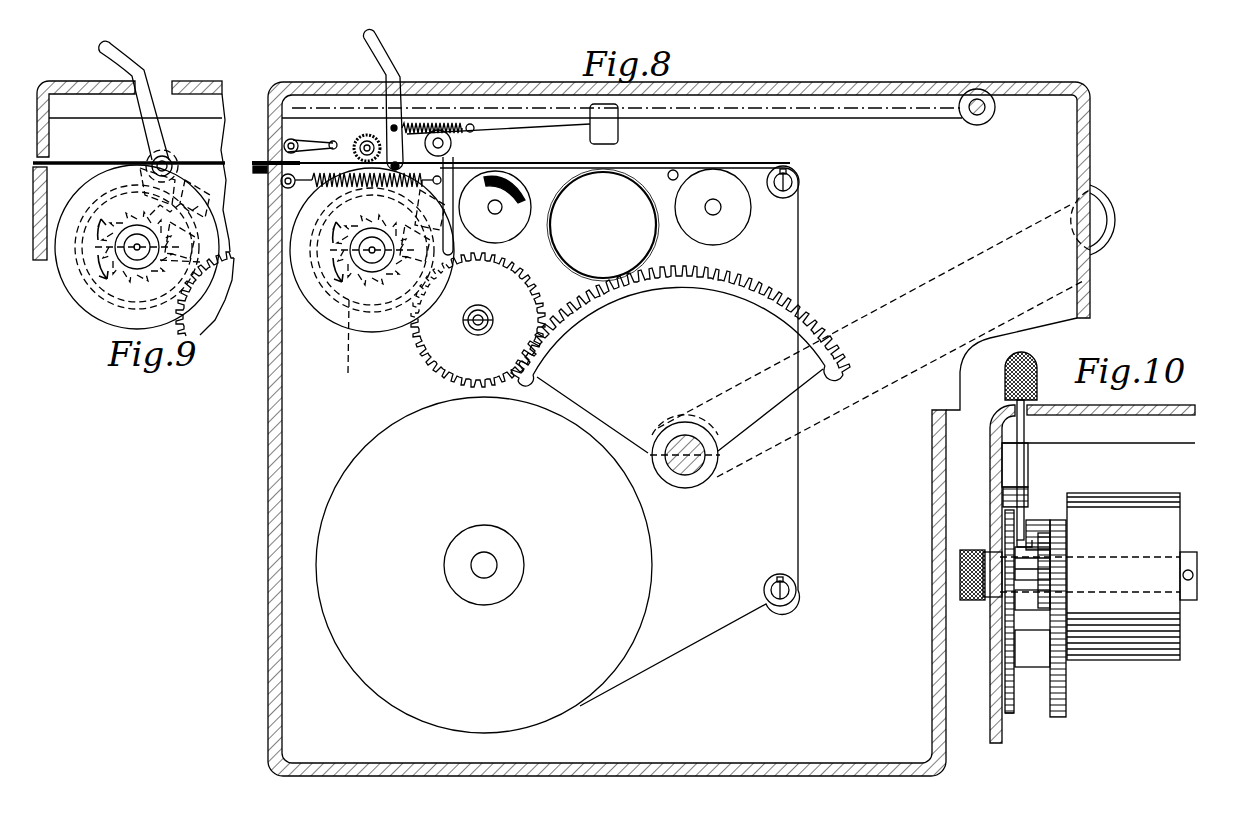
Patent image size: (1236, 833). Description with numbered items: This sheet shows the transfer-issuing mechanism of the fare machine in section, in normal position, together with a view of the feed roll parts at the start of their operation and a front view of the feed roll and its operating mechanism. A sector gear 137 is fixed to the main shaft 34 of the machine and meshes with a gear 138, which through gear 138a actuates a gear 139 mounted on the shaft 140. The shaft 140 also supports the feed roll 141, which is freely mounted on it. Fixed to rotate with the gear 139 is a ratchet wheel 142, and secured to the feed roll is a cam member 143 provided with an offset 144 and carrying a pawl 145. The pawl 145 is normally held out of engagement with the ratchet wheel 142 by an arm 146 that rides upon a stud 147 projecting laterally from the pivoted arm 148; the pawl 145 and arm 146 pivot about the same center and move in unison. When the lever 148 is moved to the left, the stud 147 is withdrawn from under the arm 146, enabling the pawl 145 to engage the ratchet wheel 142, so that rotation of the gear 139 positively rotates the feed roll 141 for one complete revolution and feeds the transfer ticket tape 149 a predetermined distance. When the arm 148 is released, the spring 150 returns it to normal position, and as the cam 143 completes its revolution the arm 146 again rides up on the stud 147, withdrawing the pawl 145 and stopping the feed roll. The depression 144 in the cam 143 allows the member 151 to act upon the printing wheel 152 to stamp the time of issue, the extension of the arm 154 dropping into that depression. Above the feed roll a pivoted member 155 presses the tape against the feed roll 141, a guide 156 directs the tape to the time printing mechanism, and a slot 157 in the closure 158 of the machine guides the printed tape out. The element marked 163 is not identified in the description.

In FIG. 8, the main shaft 34 is at (687, 472).
In FIG. 8, the sector gear 137 is at (820, 318).
In FIG. 8, the gear 138 is at (433, 373).
In FIG. 9, the gear 138 is at (212, 300).
In FIG. 10, the gear 138 is at (1067, 688).
In FIG. 10, the gear 138a is at (1010, 715).
In FIG. 8, the gear 139 is at (380, 323).
In FIG. 9, the gear 139 is at (182, 248).
In FIG. 10, the gear 139 is at (1007, 524).
In FIG. 8, the shaft 140 is at (366, 256).
In FIG. 9, the shaft 140 is at (137, 257).
In FIG. 10, the shaft 140 is at (1196, 586).
In FIG. 8, the feed roll 141 is at (312, 298).
In FIG. 9, the feed roll 141 is at (78, 297).
In FIG. 10, the feed roll 141 is at (1150, 497).
In FIG. 8, the ratchet wheel 142 is at (208, 213).
In FIG. 9, the ratchet wheel 142 is at (208, 213).
In FIG. 10, the ratchet wheel 142 is at (1043, 602).
In FIG. 8, the cam member 143 is at (351, 348).
In FIG. 9, the cam member 143 is at (217, 227).
In FIG. 8, the offset 144 is at (440, 284).
In FIG. 9, the offset 144 is at (175, 240).
In FIG. 10, the offset 144 is at (1044, 570).
In FIG. 8, the pawl 145 is at (405, 210).
In FIG. 9, the pawl 145 is at (137, 185).
In FIG. 9, the arm 146 is at (152, 163).
In FIG. 8, the stud 147 is at (440, 220).
In FIG. 9, the stud 147 is at (196, 178).
In FIG. 10, the stud 147 is at (1030, 540).
In FIG. 8, the pivoted arm 148 is at (384, 56).
In FIG. 10, the pivoted arm 148 is at (1024, 440).
In FIG. 8, the transfer ticket tape 149 is at (801, 229).
In FIG. 8, the spring 150 is at (423, 122).
In FIG. 8, the member 151 is at (618, 133).
In FIG. 8, the printing wheel 152 is at (603, 225).
In FIG. 8, the arm 154 is at (445, 182).
In FIG. 8, the pivoted member 155 is at (313, 128).
In FIG. 8, the guide 156 is at (795, 177).
In FIG. 8, the slot 157 is at (267, 143).
In FIG. 8, the closure 158 is at (270, 365).
In FIG. 8, the pawl 163 is at (470, 222).